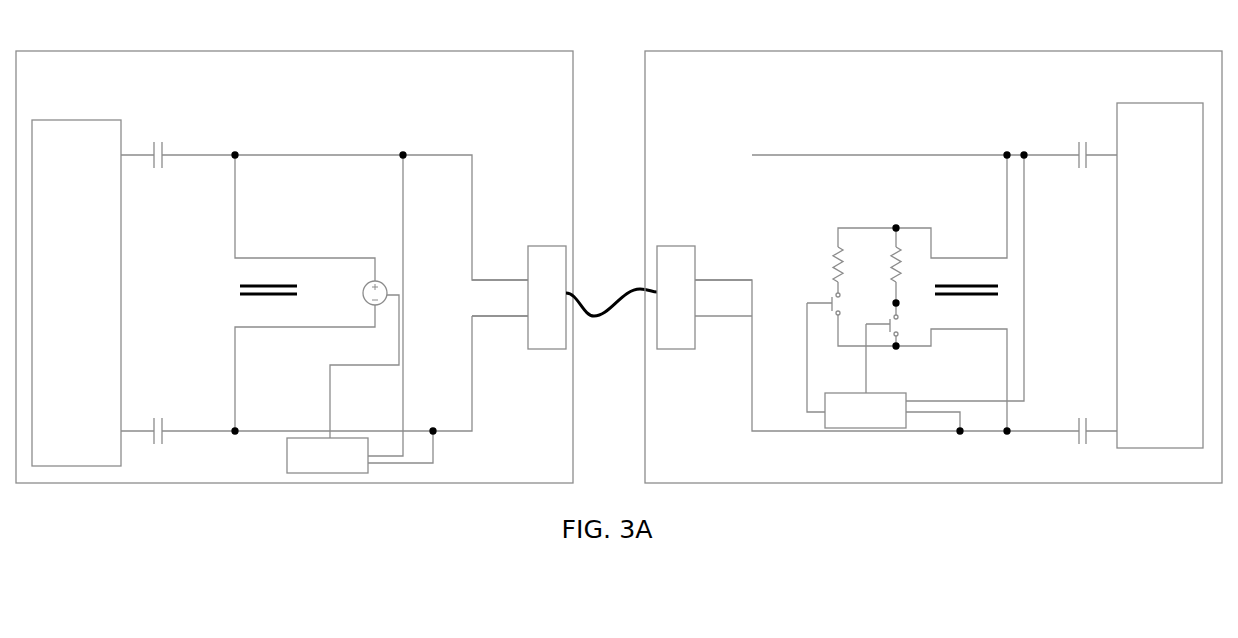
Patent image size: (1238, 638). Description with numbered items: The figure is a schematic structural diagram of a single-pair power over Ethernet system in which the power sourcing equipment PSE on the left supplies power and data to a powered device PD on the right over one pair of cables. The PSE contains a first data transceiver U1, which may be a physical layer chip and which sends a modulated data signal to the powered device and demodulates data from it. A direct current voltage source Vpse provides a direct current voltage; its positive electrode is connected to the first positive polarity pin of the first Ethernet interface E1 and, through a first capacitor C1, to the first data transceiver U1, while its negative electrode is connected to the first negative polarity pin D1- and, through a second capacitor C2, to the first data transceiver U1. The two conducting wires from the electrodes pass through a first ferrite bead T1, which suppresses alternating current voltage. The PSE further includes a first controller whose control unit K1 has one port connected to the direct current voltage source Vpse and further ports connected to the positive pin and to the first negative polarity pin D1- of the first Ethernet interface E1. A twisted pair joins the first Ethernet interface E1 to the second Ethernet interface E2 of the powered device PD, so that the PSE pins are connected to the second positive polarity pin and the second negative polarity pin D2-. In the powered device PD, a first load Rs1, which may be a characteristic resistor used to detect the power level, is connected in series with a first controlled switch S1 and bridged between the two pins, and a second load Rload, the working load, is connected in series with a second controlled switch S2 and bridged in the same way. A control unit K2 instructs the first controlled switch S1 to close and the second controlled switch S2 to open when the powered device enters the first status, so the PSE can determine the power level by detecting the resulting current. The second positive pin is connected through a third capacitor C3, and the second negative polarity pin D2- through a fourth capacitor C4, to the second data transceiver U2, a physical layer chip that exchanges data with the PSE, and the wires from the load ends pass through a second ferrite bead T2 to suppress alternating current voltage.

The power sourcing equipment PSE is at (294, 267).
The powered device PD is at (933, 267).
The first data transceiver U1 is at (76, 293).
The second data transceiver U2 is at (1160, 275).
The first capacitor C1 is at (160, 140).
The second capacitor C2 is at (160, 416).
The third capacitor C3 is at (1080, 168).
The fourth capacitor C4 is at (1080, 444).
The first ferrite bead T1 is at (268, 303).
The second ferrite bead T2 is at (966, 303).
The direct current voltage source Vpse is at (347, 293).
The control unit K1 is at (327, 455).
The control unit K2 is at (865, 410).
The first Ethernet interface E1 is at (547, 297).
The second Ethernet interface E2 is at (676, 297).
The first negative polarity pin D1- is at (500, 329).
The second negative polarity pin D2- is at (723, 329).
The second load Rload is at (806, 264).
The first load Rs1 is at (874, 264).
The first controlled switch S1 is at (912, 320).
The second controlled switch S2 is at (854, 304).